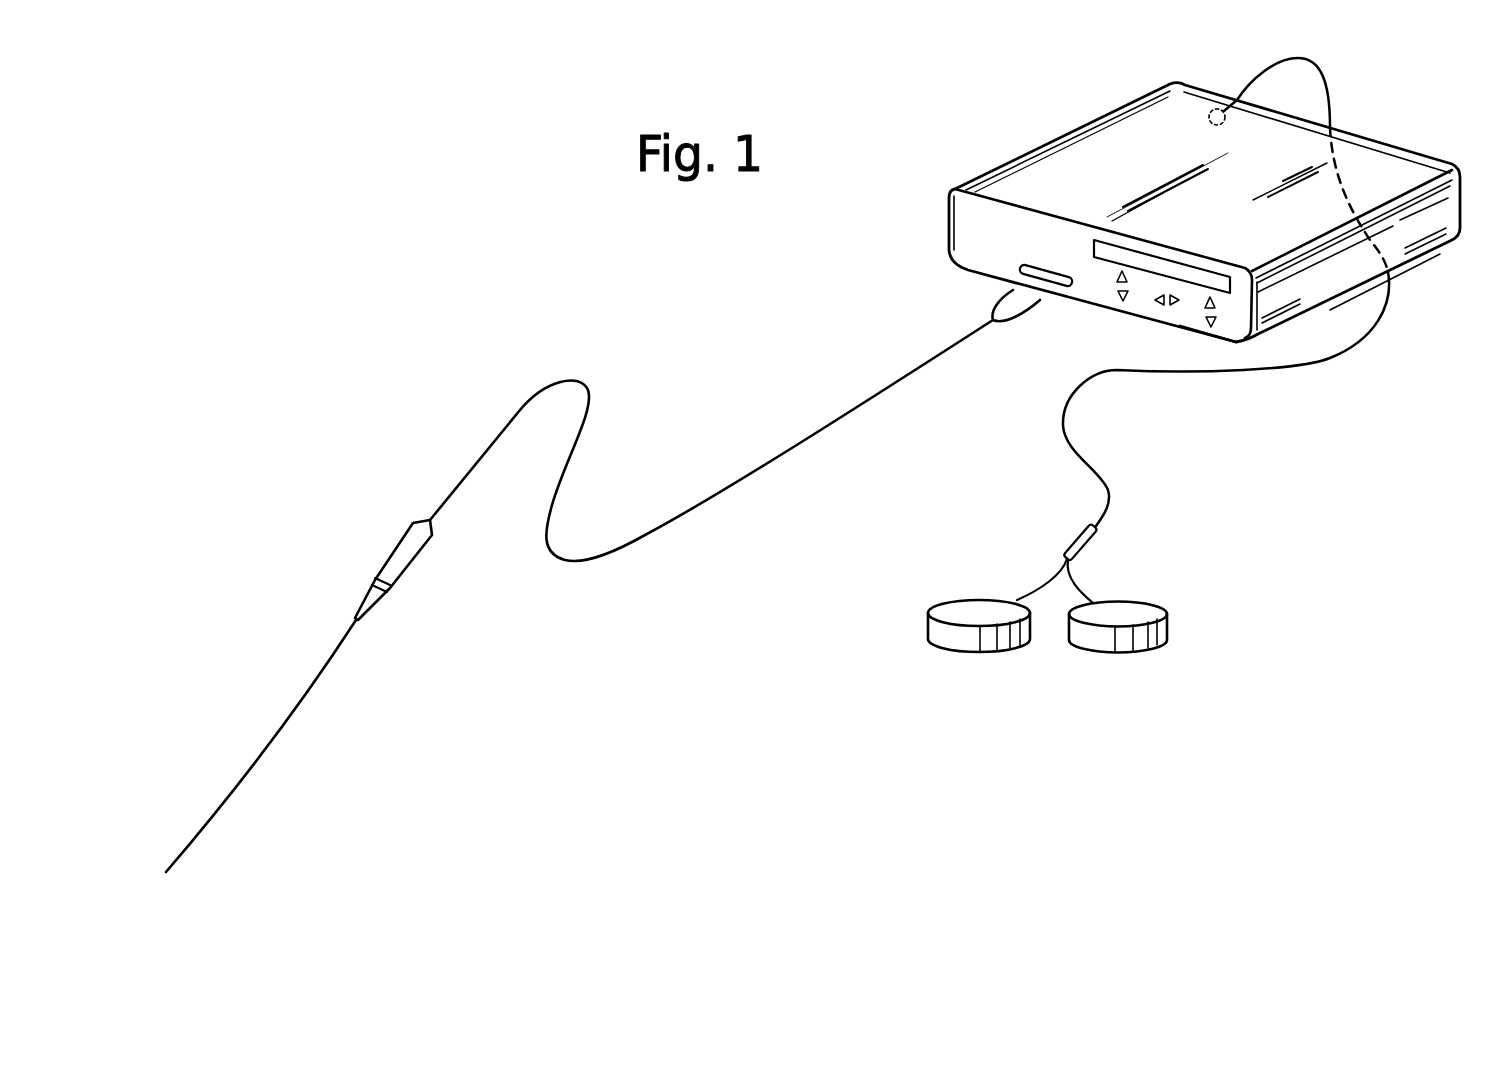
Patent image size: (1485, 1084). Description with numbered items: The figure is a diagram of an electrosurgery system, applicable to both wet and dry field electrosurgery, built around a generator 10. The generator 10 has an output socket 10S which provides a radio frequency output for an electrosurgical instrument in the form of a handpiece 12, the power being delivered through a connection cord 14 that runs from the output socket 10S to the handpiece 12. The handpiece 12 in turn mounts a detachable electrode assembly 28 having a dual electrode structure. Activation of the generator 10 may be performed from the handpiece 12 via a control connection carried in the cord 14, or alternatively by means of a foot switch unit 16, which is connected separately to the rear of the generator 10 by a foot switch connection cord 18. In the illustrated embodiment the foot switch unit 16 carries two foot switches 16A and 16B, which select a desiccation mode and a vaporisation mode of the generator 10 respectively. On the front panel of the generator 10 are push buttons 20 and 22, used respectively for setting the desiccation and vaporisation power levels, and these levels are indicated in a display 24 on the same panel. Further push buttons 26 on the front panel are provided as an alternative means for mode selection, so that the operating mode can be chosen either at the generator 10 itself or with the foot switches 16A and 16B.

The generator 10 is at (990, 168).
The output socket 10S is at (1013, 267).
The handpiece 12 is at (384, 551).
The connection cord 14 is at (753, 478).
The foot switch unit 16 is at (1031, 538).
The foot switch 16A is at (943, 642).
The foot switch 16B is at (1168, 627).
The foot switch connection cord 18 is at (1260, 373).
The push buttons 20 is at (1109, 293).
The push buttons 22 is at (1210, 346).
The display 24 is at (1190, 265).
The push buttons 26 is at (1170, 312).
The electrode assembly 28 is at (277, 724).